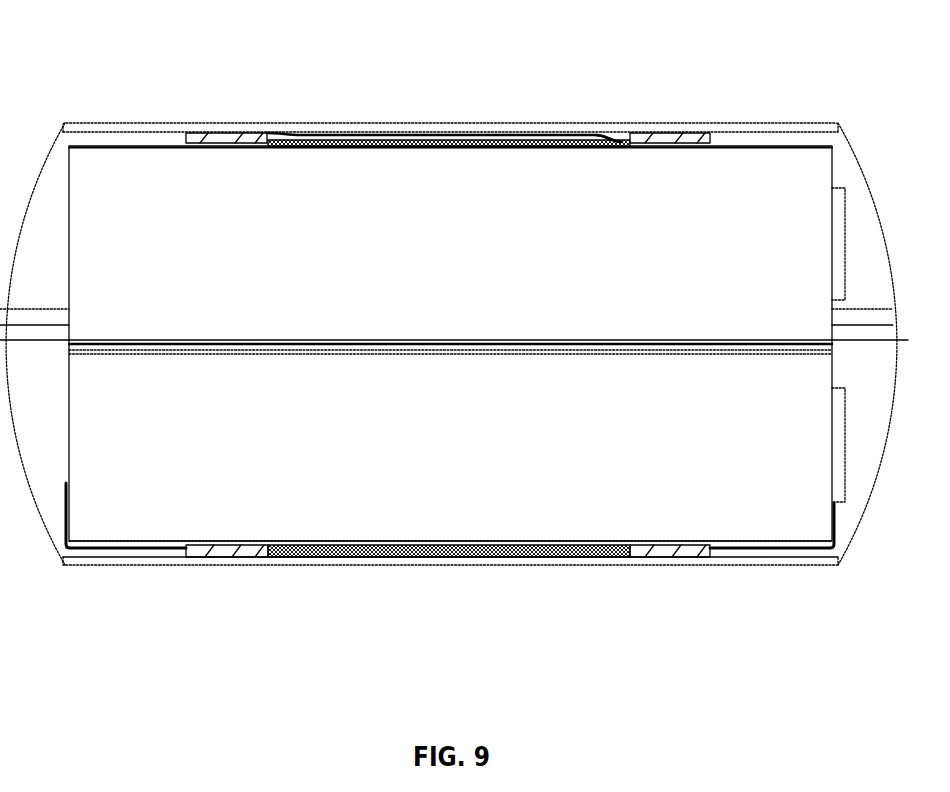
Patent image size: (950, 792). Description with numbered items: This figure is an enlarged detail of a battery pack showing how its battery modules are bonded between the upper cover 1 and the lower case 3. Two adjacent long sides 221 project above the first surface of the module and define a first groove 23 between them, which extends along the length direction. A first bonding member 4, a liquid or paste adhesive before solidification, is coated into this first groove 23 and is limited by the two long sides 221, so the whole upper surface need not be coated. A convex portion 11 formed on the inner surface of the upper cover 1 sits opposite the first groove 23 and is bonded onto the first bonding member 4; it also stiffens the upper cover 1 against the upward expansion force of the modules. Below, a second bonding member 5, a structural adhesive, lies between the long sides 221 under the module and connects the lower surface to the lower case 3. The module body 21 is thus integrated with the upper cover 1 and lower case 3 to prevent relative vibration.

The upper cover 1 is at (163, 123).
The lower case 3 is at (135, 560).
The first bonding member 4 is at (345, 131).
The second bonding member 5 is at (447, 558).
The convex portion 11 is at (432, 140).
The battery cell body 21 is at (757, 222).
The first groove 23 is at (612, 132).
The long sides 221 is at (215, 130).